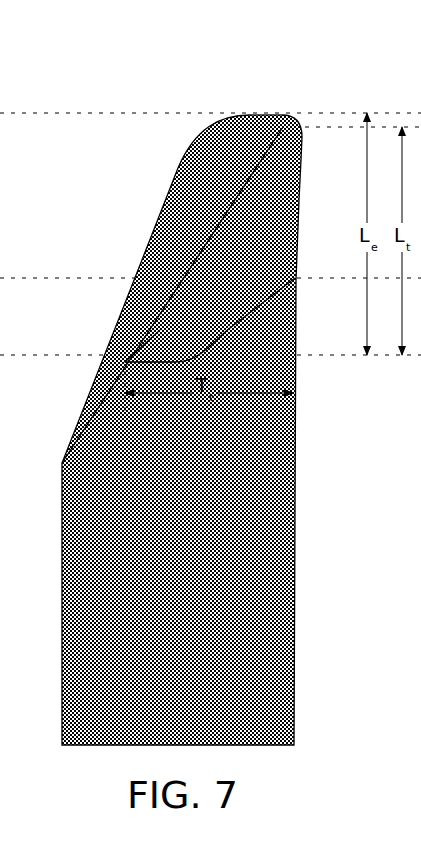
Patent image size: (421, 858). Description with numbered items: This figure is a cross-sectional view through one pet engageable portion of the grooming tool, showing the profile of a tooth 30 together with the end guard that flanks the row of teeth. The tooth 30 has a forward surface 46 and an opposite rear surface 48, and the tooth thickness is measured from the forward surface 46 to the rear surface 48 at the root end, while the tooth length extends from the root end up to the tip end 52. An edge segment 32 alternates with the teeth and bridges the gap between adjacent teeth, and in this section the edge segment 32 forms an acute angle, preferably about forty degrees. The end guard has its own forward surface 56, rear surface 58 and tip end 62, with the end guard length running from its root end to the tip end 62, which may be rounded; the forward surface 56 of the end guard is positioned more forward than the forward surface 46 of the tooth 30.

The tooth 30 is at (243, 183).
The edge segment 32 is at (292, 268).
The forward surface 46 is at (300, 162).
The rear surface 48 is at (197, 257).
The tip end 52 is at (285, 127).
The forward surface 56 is at (298, 192).
The rear surface 58 is at (160, 208).
The tip end 62 is at (256, 113).